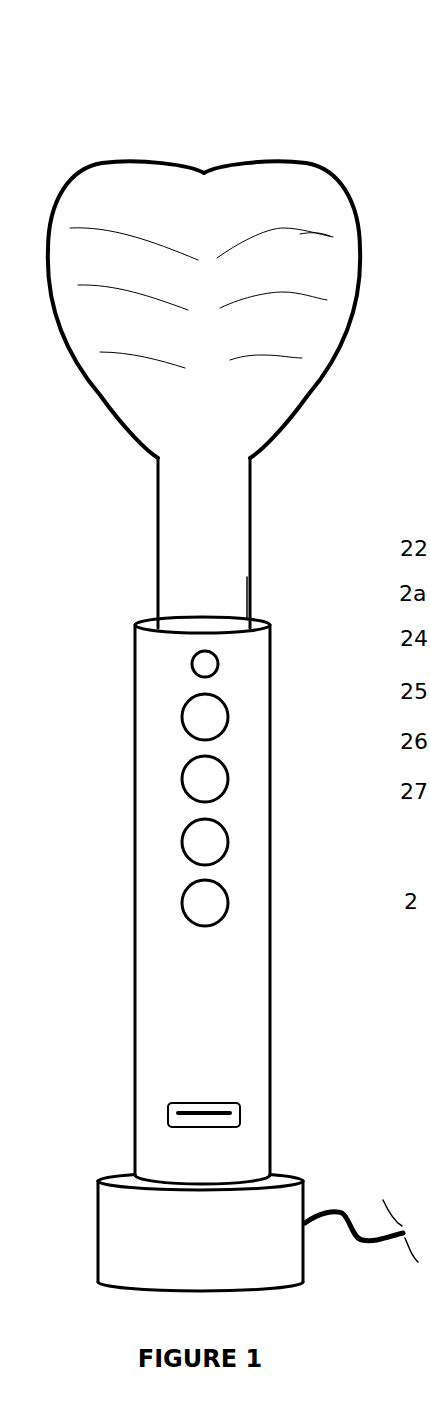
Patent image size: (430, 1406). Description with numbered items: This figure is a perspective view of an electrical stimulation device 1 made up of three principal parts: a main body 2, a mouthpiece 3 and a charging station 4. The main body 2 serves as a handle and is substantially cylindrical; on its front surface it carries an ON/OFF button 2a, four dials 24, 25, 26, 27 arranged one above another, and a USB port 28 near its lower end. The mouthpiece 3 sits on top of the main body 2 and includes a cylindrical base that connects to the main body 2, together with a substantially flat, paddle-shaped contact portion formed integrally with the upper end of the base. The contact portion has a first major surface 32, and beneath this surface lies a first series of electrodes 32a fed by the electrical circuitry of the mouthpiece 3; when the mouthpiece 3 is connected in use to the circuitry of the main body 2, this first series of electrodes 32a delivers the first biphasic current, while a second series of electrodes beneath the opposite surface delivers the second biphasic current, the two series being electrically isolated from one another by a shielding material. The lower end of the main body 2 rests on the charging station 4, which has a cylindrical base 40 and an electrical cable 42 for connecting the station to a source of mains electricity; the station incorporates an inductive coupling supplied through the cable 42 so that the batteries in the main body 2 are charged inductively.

The electrical stimulation device 1 is at (146, 86).
The main body 2 is at (306, 681).
The ON/OFF button 2a is at (204, 665).
The mouthpiece 3 is at (365, 184).
The charging station 4 is at (84, 1163).
The dial 24 is at (204, 717).
The dial 25 is at (204, 780).
The dial 26 is at (204, 843).
The dial 27 is at (204, 903).
The USB port 28 is at (232, 1103).
The first major surface 32 is at (188, 350).
The first series of electrodes 32a is at (270, 353).
The cylindrical base 40 is at (183, 1253).
The electrical cable 42 is at (352, 1212).